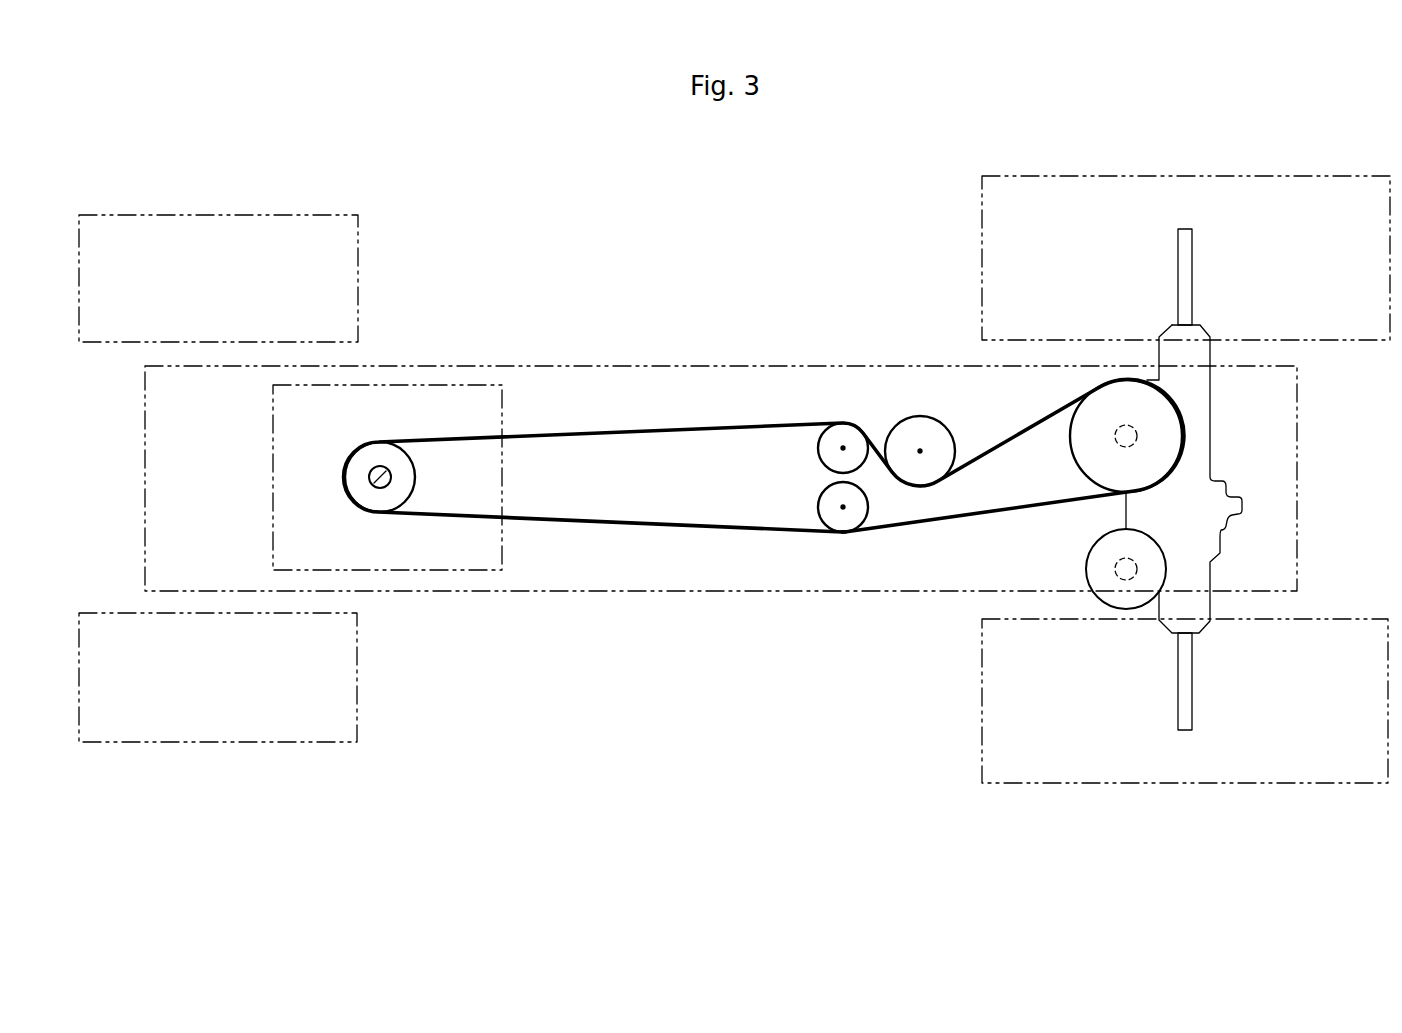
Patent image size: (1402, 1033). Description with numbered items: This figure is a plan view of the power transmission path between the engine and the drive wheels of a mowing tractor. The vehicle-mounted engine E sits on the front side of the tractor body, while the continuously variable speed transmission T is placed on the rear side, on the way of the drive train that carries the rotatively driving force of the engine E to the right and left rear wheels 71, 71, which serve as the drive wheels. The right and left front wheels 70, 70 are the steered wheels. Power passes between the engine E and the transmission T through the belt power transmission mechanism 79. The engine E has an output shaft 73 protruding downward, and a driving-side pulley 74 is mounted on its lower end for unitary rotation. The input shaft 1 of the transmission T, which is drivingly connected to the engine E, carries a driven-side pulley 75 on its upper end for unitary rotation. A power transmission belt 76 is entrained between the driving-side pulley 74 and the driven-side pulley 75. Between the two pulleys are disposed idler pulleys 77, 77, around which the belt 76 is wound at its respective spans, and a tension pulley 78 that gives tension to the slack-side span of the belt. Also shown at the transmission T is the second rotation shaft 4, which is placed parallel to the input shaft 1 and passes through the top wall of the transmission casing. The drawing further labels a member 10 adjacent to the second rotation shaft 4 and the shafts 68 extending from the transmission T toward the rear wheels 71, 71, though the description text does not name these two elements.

The input shaft 1 is at (1126, 422).
The second rotation shaft 4 is at (1087, 563).
The developing roller shaft 10 is at (1104, 606).
The shaft 68 is at (1193, 247).
The front wheels 70 is at (203, 212).
The rear wheels 71 is at (1188, 176).
The output shaft 73 is at (373, 468).
The driving-side pulley 74 is at (417, 477).
The driven-side pulley 75 is at (1072, 448).
The power transmission belt 76 is at (575, 522).
The idler pulleys 77 is at (818, 448).
The tension pulley 78 is at (945, 422).
The belt power transmission mechanism 79 is at (862, 534).
The engine E is at (272, 482).
The continuously variable speed transmission T is at (1210, 437).